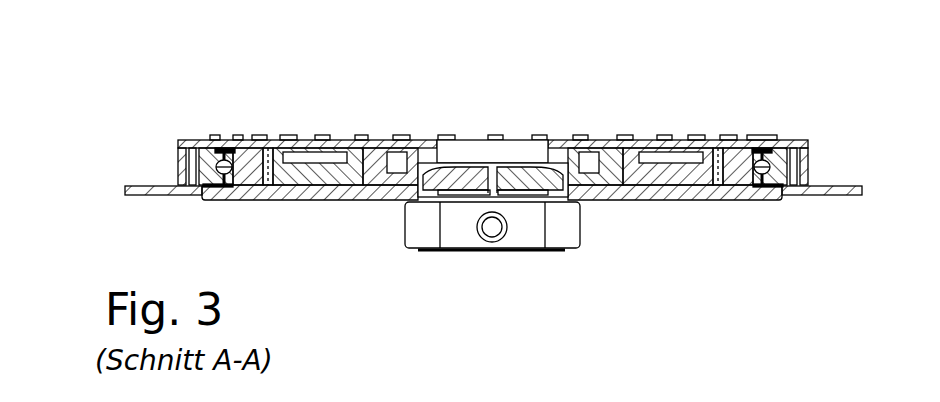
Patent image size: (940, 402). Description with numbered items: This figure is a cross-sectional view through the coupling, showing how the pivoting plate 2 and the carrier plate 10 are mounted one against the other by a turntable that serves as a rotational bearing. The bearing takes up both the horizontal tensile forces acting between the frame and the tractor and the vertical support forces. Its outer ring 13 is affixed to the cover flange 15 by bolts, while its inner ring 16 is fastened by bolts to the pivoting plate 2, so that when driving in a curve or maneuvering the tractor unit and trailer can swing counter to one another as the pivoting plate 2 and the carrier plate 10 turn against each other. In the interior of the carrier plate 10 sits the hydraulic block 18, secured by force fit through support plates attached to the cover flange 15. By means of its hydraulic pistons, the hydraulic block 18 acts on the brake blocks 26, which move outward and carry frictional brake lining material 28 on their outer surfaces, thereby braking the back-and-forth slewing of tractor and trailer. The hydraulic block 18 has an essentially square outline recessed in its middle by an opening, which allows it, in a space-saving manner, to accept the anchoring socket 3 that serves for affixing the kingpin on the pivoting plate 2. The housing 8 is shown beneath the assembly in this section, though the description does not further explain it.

The pivoting plate 2 is at (281, 200).
The anchoring socket 3 is at (408, 203).
The housing 8 is at (561, 233).
The carrier plate 10 is at (135, 185).
The outer ring 13 is at (807, 139).
The cover flange 15 is at (787, 139).
The inner ring 16 is at (740, 177).
The hydraulic block 18 is at (563, 139).
The brake blocks 26 is at (598, 139).
The frictional brake lining material 28 is at (720, 173).